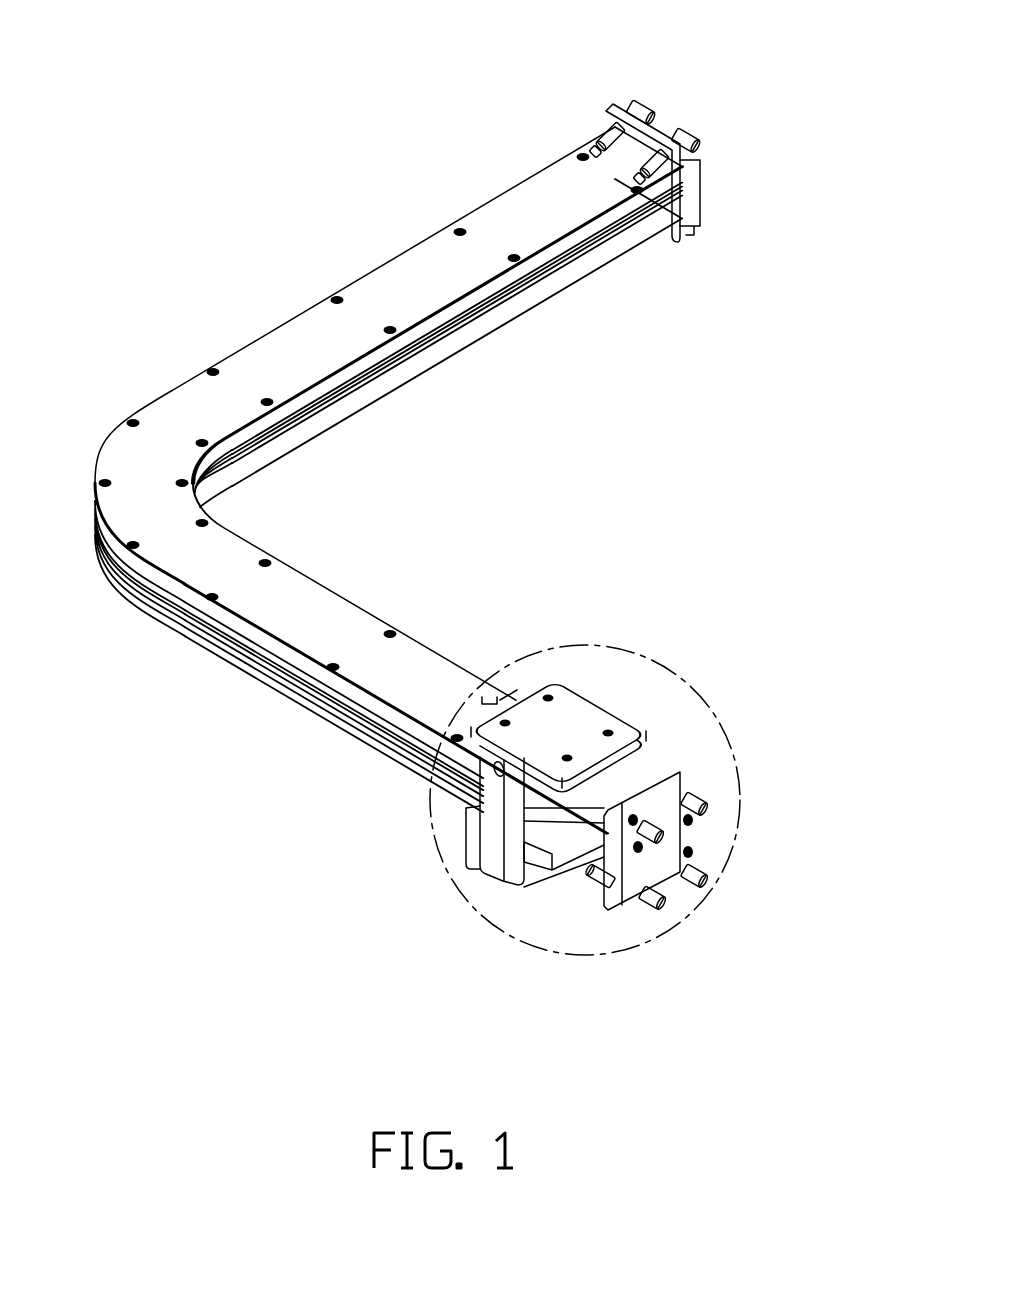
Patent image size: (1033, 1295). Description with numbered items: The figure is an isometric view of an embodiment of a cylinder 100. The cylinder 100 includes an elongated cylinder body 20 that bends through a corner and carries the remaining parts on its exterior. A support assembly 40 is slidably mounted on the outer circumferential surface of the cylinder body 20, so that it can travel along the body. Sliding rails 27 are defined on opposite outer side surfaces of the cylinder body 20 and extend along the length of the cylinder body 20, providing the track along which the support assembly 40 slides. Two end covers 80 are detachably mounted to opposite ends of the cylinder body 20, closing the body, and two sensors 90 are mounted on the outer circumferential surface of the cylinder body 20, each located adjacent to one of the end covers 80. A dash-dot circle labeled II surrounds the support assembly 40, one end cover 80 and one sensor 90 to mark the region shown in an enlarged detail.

The cylinder 100 is at (429, 35).
The cylinder body 20 is at (271, 362).
The sliding rail 27 is at (553, 837).
The support assembly 40 is at (571, 724).
The end cover 80 is at (676, 845).
The sensor 90 is at (583, 857).
The detail view indicator II is at (722, 724).